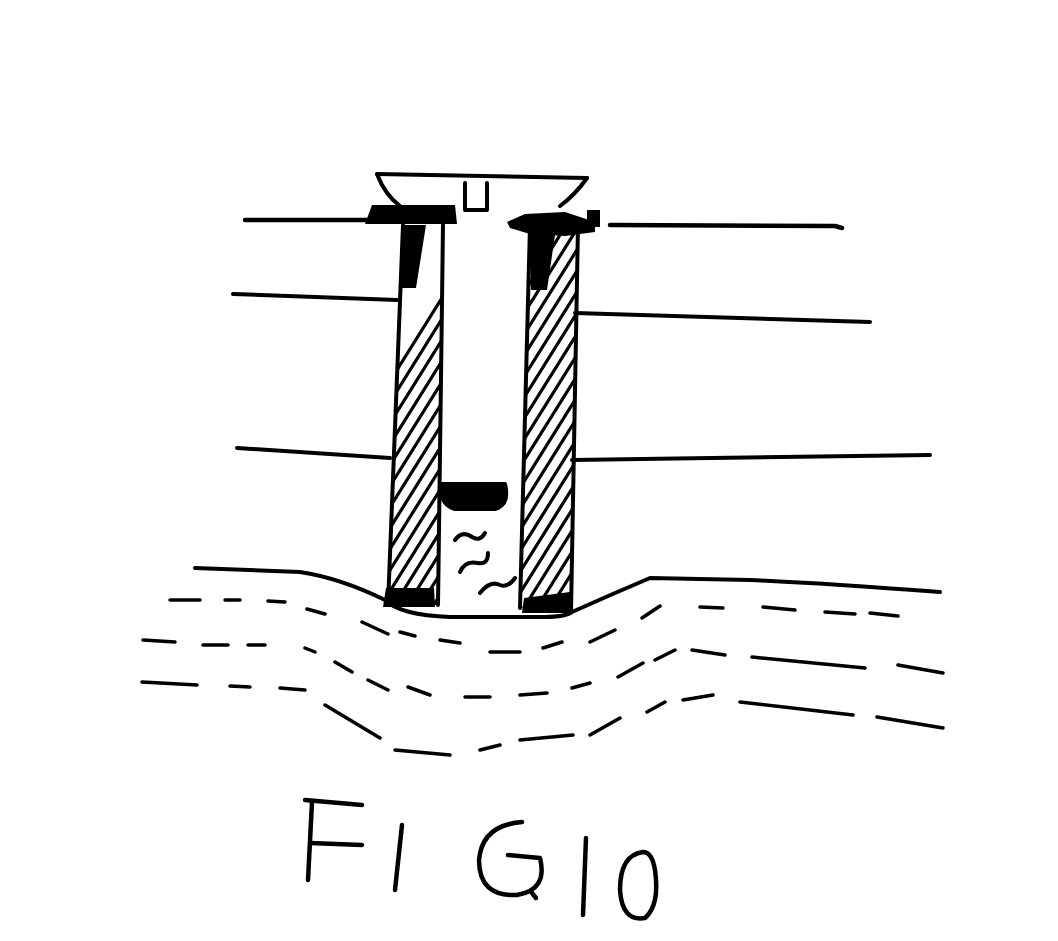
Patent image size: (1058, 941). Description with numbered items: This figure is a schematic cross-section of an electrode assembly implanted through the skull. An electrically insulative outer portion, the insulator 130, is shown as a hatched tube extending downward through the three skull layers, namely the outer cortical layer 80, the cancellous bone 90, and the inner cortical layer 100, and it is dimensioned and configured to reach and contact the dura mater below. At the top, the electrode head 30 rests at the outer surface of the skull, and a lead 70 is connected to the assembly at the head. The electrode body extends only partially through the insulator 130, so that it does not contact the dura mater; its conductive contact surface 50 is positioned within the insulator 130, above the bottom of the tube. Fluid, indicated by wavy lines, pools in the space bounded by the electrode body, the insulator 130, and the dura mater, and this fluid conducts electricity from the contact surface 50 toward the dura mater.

The electrode head 30 is at (557, 178).
The conductive contact surface 50 is at (475, 484).
The lead 70 is at (373, 220).
The outer cortical layer 80 is at (278, 256).
The cancellous bone 90 is at (273, 386).
The inner cortical layer 100 is at (263, 532).
The insulator/dielectric member 130 is at (573, 375).